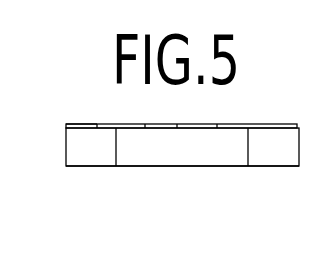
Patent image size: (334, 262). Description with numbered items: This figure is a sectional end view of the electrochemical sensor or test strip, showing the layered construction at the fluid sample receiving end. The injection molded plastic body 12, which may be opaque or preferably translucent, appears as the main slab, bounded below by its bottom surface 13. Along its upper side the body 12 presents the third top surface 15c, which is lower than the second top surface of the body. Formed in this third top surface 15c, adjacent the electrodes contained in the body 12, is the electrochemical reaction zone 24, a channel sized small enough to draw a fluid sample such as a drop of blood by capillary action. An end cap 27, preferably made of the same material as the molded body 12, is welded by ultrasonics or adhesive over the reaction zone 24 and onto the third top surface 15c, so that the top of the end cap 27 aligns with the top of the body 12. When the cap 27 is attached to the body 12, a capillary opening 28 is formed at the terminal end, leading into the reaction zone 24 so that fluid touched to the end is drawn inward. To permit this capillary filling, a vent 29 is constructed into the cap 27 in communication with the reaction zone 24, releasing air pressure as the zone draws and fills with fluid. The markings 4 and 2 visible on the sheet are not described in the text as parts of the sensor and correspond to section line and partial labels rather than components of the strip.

The section line 4- 4 is at (58, 4).
The partial numeral 2 is at (6, 125).
The body 12 is at (80, 151).
The bottom surface 13 is at (97, 180).
The third top surface 15c is at (97, 116).
The electrochemical reaction zone 24 is at (239, 165).
The end cap 27 is at (78, 124).
The capillary opening 28 is at (214, 150).
The vent 29 is at (183, 116).